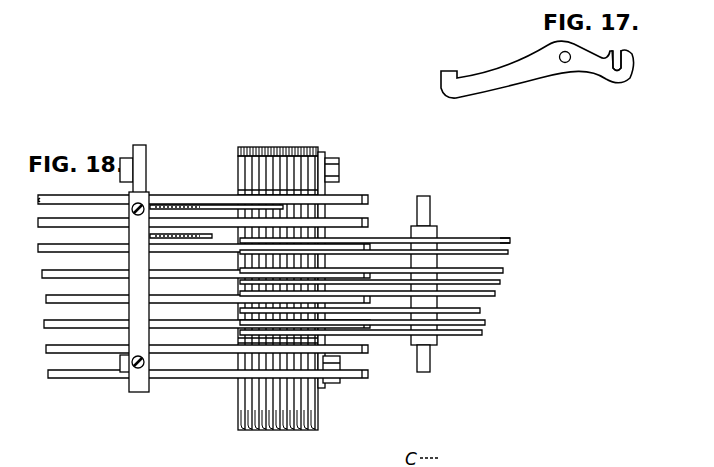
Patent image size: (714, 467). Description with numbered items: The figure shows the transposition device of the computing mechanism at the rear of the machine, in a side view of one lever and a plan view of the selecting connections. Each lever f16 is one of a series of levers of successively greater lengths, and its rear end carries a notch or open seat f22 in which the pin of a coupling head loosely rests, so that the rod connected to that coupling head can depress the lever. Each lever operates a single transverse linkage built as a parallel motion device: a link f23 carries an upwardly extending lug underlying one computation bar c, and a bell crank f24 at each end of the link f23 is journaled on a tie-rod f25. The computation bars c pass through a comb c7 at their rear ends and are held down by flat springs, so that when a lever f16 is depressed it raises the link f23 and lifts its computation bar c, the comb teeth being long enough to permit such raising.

In FIG. 17, the lever f16 is at (509, 80).
In FIG. 18, the lever f16 is at (470, 294).
In FIG. 17, the notch or open seat f22 is at (619, 70).
In FIG. 18, the notch or open seat f22 is at (490, 250).
In FIG. 18, the link f23 is at (235, 319).
In FIG. 18, the bell crank f24 is at (320, 147).
In FIG. 18, the tie-rod f25 is at (339, 169).
In FIG. 18, the computation bar c is at (197, 355).
In FIG. 18, the vertical bar c7 is at (146, 150).